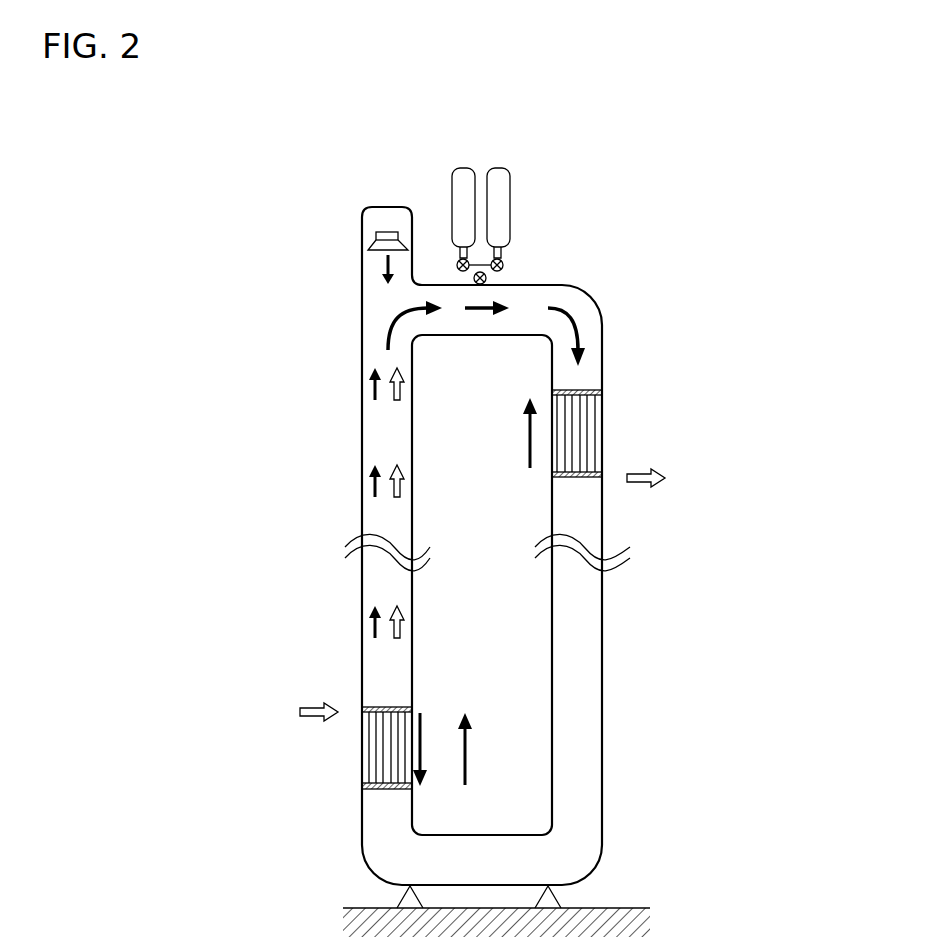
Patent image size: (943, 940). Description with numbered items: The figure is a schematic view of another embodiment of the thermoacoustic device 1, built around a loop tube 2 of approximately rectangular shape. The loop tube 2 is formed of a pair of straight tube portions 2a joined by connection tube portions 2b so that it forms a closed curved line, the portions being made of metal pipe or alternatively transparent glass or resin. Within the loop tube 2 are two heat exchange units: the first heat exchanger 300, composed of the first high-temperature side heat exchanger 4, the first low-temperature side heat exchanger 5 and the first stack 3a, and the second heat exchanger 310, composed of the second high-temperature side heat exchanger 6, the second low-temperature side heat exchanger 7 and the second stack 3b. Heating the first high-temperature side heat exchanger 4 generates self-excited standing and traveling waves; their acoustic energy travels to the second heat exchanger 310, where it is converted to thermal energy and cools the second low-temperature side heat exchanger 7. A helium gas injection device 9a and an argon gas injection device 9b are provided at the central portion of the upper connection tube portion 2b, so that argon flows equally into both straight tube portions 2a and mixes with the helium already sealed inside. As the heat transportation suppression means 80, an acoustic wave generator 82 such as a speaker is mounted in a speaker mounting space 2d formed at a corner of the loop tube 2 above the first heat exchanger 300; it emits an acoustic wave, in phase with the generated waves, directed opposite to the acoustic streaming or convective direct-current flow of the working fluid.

The thermoacoustic device 1 is at (613, 216).
The loop tube 2 is at (476, 546).
The straight tube portions 2a is at (362, 588).
The connection tube portions 2b is at (500, 835).
The speaker mounting space 2d is at (370, 222).
The first stack 3a is at (362, 748).
The second stack 3b is at (603, 435).
The first high-temperature side heat exchanger 4 is at (362, 708).
The first low-temperature side heat exchanger 5 is at (362, 790).
The second high-temperature side heat exchanger 6 is at (603, 392).
The second low-temperature side heat exchanger 7 is at (603, 478).
The helium gas injection device 9a is at (463, 168).
The argon gas injection device 9b is at (497, 168).
The heat transportation suppression means 80 is at (333, 199).
The acoustic wave generator 82 is at (388, 232).
The first heat exchanger 300 is at (291, 747).
The second heat exchanger 310 is at (672, 442).